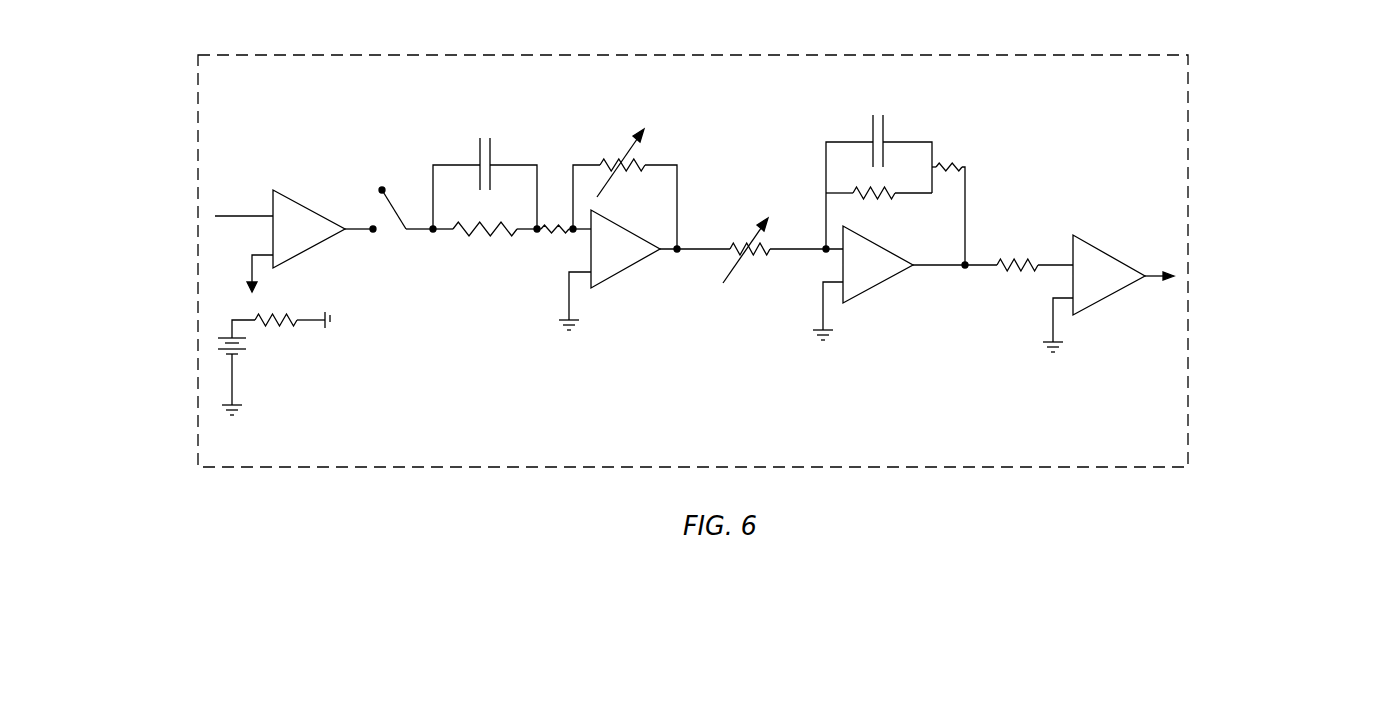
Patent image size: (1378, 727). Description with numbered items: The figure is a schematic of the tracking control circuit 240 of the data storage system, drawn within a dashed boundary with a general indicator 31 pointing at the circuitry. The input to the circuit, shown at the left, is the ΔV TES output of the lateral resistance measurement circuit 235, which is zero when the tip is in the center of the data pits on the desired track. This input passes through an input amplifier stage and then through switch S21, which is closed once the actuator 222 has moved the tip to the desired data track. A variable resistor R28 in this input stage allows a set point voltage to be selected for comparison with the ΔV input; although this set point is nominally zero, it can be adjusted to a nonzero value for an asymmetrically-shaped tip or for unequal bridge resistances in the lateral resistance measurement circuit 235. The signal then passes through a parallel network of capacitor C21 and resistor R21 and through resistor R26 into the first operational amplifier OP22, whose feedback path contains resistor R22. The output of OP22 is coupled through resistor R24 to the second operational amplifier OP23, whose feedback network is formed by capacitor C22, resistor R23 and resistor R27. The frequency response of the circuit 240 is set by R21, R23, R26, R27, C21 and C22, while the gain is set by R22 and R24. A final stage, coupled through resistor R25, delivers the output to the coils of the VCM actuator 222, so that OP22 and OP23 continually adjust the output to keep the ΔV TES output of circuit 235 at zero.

The tracking control circuit 240 is at (858, 55).
The compensation circuit 31 is at (740, 118).
The lateral resistance measurement circuit 235 is at (112, 245).
The actuator 222 is at (1258, 280).
The switch S21 is at (389, 187).
The capacitor C21 is at (485, 165).
The resistor R21 is at (485, 244).
The resistor R26 is at (551, 246).
The resistor R22 is at (625, 175).
The operational amplifier OP22 is at (616, 270).
The resistor R24 is at (753, 232).
The capacitor C22 is at (879, 166).
The resistor R23 is at (881, 206).
The resistor R27 is at (955, 197).
The operational amplifier OP23 is at (874, 283).
The resistor R25 is at (1035, 250).
The variable resistor R28 is at (274, 350).